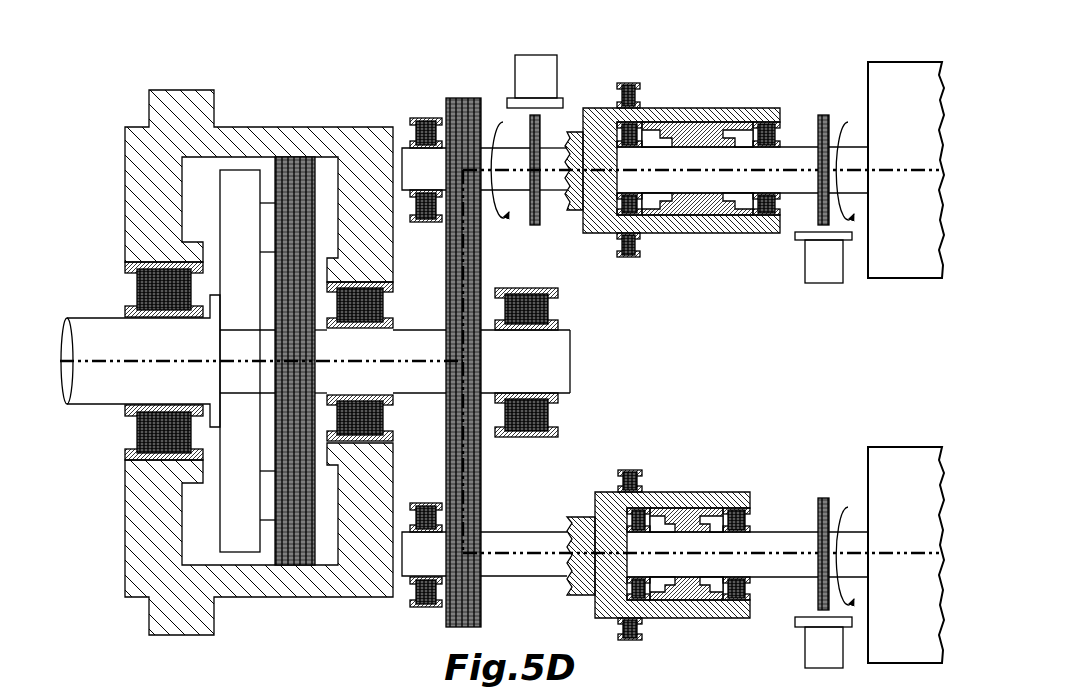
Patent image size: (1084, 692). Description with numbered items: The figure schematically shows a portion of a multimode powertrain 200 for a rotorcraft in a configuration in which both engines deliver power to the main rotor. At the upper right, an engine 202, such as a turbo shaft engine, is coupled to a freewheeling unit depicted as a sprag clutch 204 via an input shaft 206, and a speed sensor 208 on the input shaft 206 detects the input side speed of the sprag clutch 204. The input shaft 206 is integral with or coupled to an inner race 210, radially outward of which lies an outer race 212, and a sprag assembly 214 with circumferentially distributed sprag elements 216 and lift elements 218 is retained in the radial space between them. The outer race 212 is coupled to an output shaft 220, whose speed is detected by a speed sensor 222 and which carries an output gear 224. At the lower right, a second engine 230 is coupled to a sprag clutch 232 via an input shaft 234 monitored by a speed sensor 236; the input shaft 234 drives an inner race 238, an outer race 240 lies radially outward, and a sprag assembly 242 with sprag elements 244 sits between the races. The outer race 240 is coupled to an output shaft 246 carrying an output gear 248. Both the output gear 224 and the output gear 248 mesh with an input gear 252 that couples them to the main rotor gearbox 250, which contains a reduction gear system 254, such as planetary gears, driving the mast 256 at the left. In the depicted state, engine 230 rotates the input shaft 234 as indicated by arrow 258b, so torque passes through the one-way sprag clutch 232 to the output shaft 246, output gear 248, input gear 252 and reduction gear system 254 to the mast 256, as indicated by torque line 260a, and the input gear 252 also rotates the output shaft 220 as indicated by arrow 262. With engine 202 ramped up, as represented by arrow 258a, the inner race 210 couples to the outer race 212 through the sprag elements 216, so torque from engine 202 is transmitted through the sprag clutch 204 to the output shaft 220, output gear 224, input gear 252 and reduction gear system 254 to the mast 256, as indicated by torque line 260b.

The multimode powertrain 200 is at (366, 86).
The engine 202 is at (906, 170).
The sprag clutch 204 is at (748, 106).
The input shaft 206 is at (799, 147).
The speed sensor 208 is at (825, 283).
The inner race 210 is at (708, 155).
The outer race 212 is at (670, 108).
The sprag assembly 214 is at (718, 217).
The sprag elements 216 is at (701, 215).
The lift elements 218 is at (645, 220).
The output shaft 220 is at (547, 188).
The speed sensor 222 is at (548, 65).
The output gear 224 is at (465, 98).
The engine 230 is at (906, 555).
The sprag clutch 232 is at (717, 490).
The input shaft 234 is at (787, 540).
The speed sensor 236 is at (805, 660).
The inner race 238 is at (697, 538).
The outer race 240 is at (657, 492).
The sprag assembly 242 is at (701, 602).
The sprag elements 244 is at (673, 600).
The output shaft 246 is at (526, 576).
The output gear 248 is at (448, 620).
The main rotor gearbox 250 is at (249, 127).
The input gear 252 is at (479, 458).
The reduction gear system 254 is at (302, 157).
The mast 256 is at (100, 404).
The arrow 258a is at (848, 124).
The arrow 258b is at (848, 509).
The torque line 260a is at (896, 551).
The torque line 260b is at (896, 168).
The arrow 262 is at (503, 120).